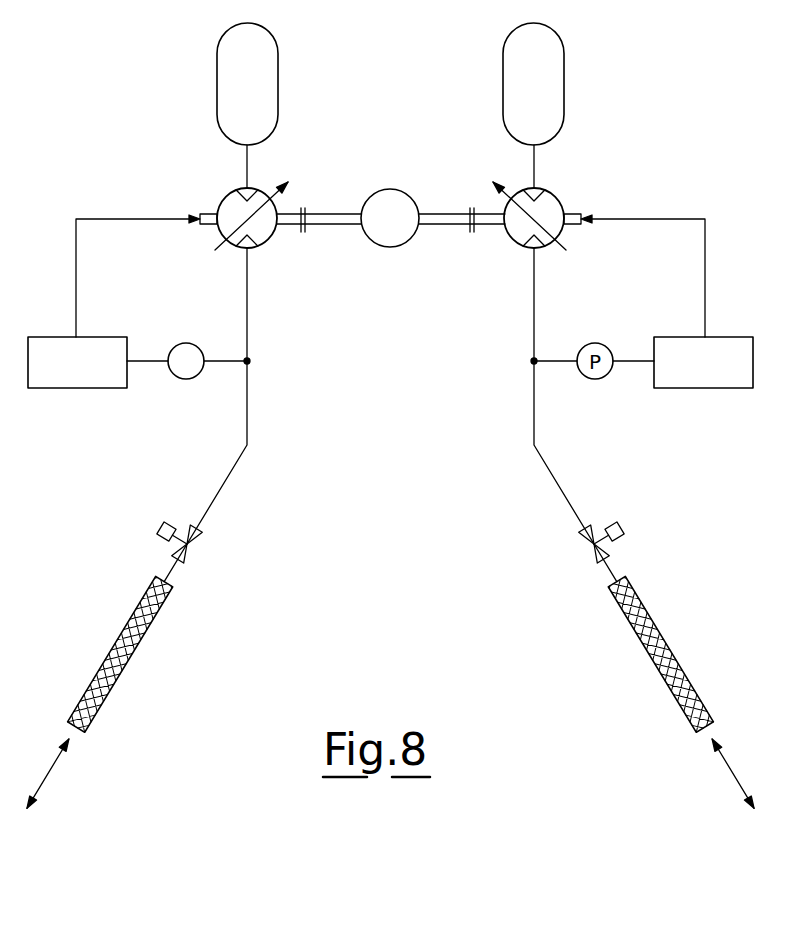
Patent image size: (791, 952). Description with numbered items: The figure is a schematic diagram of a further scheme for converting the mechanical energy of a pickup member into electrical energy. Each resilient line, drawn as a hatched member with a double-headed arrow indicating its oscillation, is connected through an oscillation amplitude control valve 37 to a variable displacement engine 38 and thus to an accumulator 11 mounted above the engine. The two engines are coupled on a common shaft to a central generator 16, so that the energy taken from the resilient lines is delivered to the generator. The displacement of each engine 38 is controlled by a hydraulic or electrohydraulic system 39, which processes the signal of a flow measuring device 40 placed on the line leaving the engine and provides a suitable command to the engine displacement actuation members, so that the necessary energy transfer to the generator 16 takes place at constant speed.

The accumulator 11 is at (228, 48).
The variable displacement engine 38 is at (222, 207).
The generator 16 is at (388, 195).
The hydraulic or electrohydraulic system 39 is at (73, 380).
The flow measuring device 40 is at (183, 378).
The oscillation amplitude control valve 37 is at (191, 552).